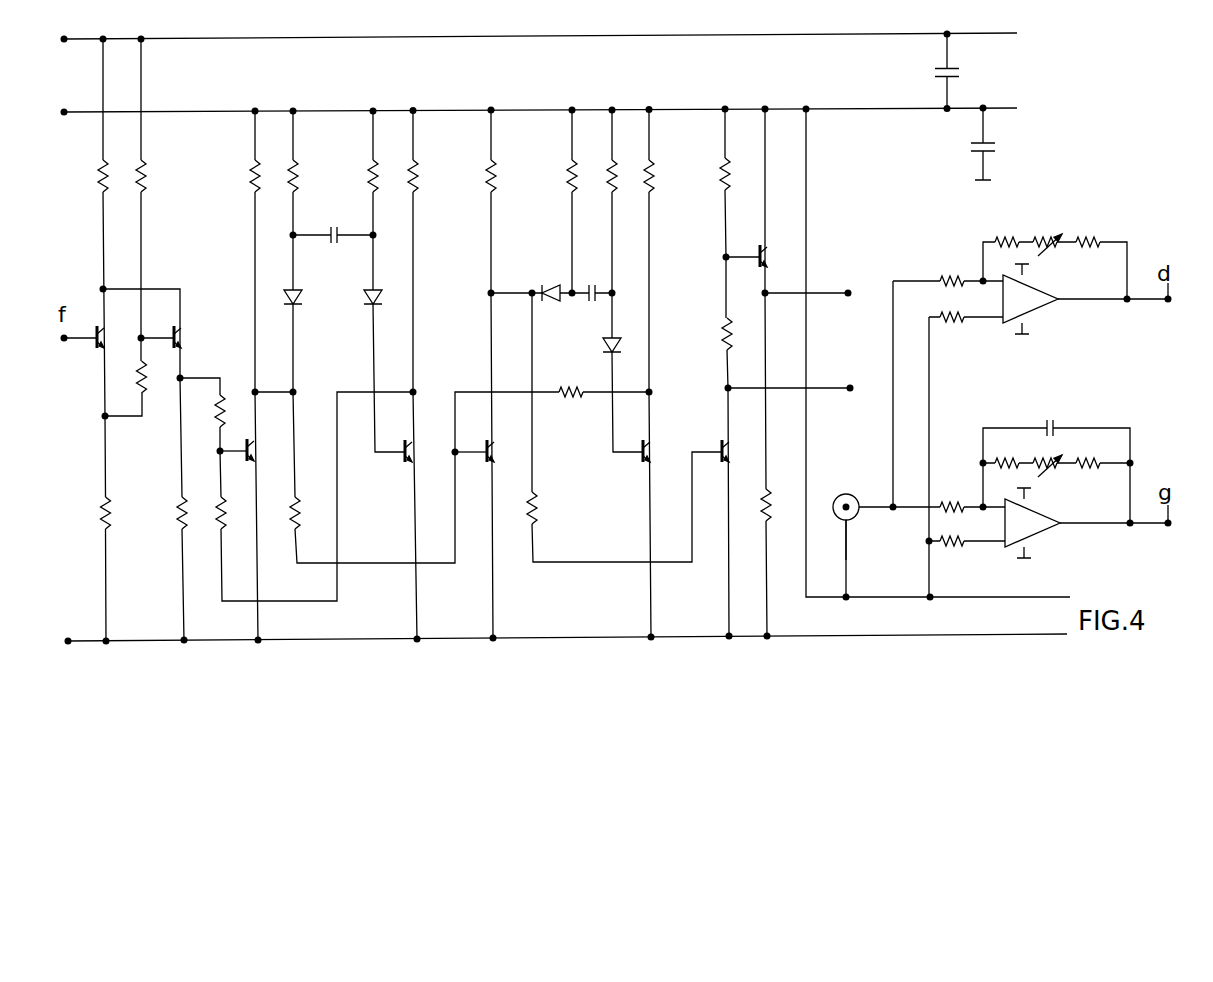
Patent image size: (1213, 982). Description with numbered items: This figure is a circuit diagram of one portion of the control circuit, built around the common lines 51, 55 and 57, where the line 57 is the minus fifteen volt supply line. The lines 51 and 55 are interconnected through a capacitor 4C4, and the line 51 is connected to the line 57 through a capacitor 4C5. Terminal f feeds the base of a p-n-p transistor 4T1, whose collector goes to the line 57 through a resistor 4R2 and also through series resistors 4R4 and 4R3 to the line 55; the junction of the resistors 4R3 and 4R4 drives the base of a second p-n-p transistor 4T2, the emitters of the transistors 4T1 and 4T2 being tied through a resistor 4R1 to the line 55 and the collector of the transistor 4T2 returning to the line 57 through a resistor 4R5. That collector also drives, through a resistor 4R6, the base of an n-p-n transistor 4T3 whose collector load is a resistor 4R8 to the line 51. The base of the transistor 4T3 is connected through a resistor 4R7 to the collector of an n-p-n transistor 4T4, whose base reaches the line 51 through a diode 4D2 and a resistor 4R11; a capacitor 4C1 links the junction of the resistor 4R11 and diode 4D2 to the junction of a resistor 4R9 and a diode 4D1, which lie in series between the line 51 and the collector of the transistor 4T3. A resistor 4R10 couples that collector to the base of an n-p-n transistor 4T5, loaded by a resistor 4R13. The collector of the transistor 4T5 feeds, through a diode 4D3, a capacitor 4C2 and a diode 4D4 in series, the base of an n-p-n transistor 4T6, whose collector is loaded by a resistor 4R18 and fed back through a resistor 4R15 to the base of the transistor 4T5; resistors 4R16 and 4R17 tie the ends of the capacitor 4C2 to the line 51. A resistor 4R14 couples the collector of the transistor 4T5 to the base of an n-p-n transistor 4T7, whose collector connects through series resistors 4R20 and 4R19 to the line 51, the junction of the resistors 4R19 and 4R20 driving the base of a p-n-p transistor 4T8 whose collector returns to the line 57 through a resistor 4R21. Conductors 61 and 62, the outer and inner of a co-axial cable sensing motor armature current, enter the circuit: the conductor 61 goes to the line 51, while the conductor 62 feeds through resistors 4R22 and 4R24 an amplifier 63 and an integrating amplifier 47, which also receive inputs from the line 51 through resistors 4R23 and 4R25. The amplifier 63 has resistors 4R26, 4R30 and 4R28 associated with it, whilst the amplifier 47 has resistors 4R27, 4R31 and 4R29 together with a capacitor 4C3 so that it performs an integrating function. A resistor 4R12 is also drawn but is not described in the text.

The line 55 is at (396, 36).
The line 51 is at (440, 110).
The minus 15 volts supply line 57 is at (217, 643).
The resistor 4R1 is at (83, 177).
The resistor 4R2 is at (127, 513).
The resistor 4R3 is at (161, 177).
The resistor 4R4 is at (161, 377).
The resistor 4R5 is at (163, 506).
The resistor 4R6 is at (238, 411).
The resistor 4R7 is at (238, 506).
The resistor 4R8 is at (228, 172).
The resistor 4R9 is at (312, 176).
The resistor 4R10 is at (298, 512).
The resistor 4R11 is at (350, 180).
The resistor 4R12 is at (437, 177).
The resistor 4R13 is at (516, 171).
The resistor 4R14 is at (558, 508).
The resistor 4R15 is at (572, 379).
The resistor 4R16 is at (545, 177).
The resistor 4R17 is at (614, 170).
The resistor 4R18 is at (676, 177).
The resistor 4R19 is at (728, 176).
The resistor 4R20 is at (705, 336).
The resistor 4R21 is at (768, 498).
The resistor 4R22 is at (946, 271).
The resistor 4R23 is at (954, 307).
The resistor 4R24 is at (945, 502).
The resistor 4R25 is at (959, 538).
The resistor 4R26 is at (1010, 228).
The resistor 4R27 is at (1014, 454).
The resistor 4R28 is at (1099, 228).
The resistor 4R29 is at (1102, 454).
The resistor 4R30 is at (1044, 250).
The resistor 4R31 is at (1058, 474).
The capacitor 4C1 is at (330, 250).
The capacitor 4C2 is at (593, 306).
The capacitor 4C3 is at (1073, 419).
The capacitor 4C4 is at (970, 73).
The capacitor 4C5 is at (960, 151).
The diode 4D1 is at (315, 301).
The diode 4D2 is at (380, 300).
The diode 4D3 is at (540, 281).
The diode 4D4 is at (588, 349).
The p-n-p transistor 4T1 is at (116, 340).
The p-n-p transistor 4T2 is at (197, 337).
The n-p-n transistor 4T3 is at (269, 451).
The n-p-n transistor 4T4 is at (425, 452).
The n-p-n transistor 4T5 is at (506, 452).
The n-p-n transistor 4T6 is at (665, 449).
The n-p-n transistor 4T7 is at (743, 449).
The p-n-p transistor 4T8 is at (781, 258).
The conductor 62 is at (852, 501).
The conductor 61 is at (852, 524).
The amplifier 63 is at (1040, 307).
The integrating amplifier 47 is at (1037, 537).